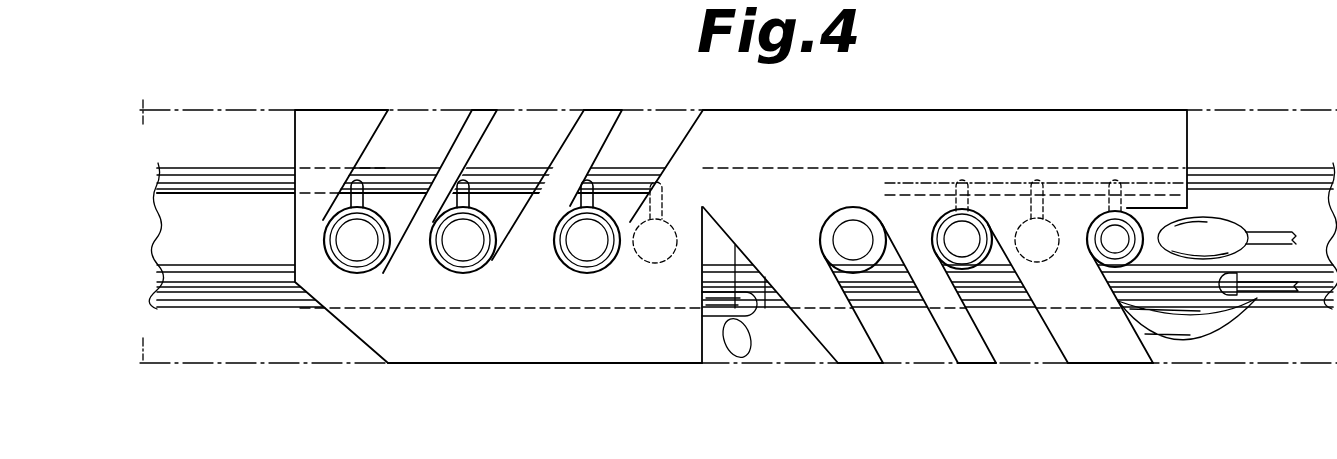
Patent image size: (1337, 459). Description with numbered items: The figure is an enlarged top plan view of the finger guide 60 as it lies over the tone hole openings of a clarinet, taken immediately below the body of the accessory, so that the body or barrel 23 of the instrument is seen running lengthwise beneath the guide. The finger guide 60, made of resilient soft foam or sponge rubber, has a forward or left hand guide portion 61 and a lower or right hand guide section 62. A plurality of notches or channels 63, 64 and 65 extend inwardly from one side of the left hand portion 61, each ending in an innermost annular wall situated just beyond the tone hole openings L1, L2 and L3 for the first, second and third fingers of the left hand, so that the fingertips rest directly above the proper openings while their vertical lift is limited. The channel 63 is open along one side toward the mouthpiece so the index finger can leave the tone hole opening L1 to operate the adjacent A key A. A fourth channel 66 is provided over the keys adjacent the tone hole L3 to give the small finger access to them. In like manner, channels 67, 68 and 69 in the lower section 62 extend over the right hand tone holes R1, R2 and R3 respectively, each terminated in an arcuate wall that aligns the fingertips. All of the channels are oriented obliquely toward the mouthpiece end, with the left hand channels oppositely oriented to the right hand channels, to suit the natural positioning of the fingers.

The body or barrel 23 is at (262, 130).
The finger guide 60 is at (910, 78).
The forward or left hand guide portion 61 is at (1008, 88).
The lower or right hand guide section 62 is at (392, 364).
The channel 63 is at (1157, 220).
The channel 64 is at (1020, 342).
The channel 65 is at (913, 347).
The fourth channel 66 is at (768, 347).
The channel 67 is at (640, 130).
The channel 68 is at (520, 125).
The channel 69 is at (415, 135).
The tone hole R1 is at (587, 226).
The tone hole R2 is at (463, 226).
The tone hole R3 is at (357, 226).
The tone hole opening L1 is at (1120, 222).
The tone hole opening L2 is at (962, 222).
The tone hole opening L3 is at (853, 228).
The A key A is at (1228, 228).